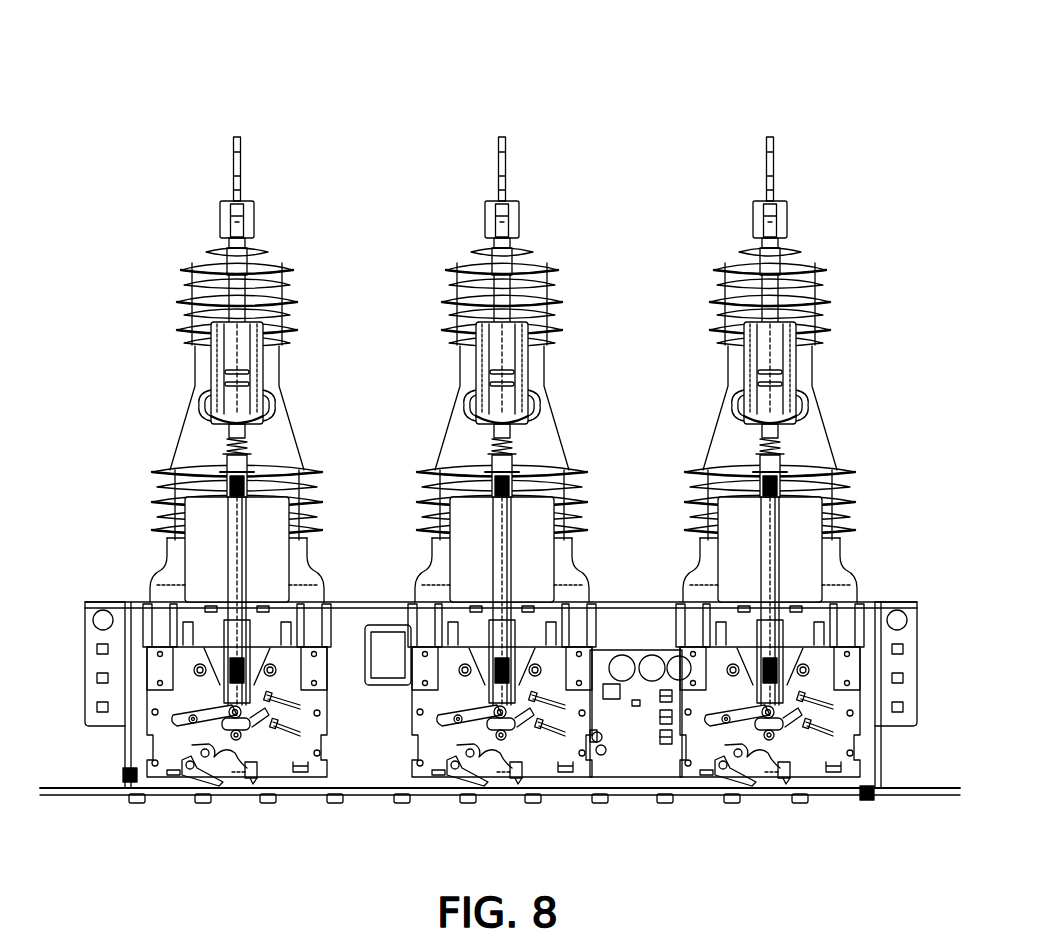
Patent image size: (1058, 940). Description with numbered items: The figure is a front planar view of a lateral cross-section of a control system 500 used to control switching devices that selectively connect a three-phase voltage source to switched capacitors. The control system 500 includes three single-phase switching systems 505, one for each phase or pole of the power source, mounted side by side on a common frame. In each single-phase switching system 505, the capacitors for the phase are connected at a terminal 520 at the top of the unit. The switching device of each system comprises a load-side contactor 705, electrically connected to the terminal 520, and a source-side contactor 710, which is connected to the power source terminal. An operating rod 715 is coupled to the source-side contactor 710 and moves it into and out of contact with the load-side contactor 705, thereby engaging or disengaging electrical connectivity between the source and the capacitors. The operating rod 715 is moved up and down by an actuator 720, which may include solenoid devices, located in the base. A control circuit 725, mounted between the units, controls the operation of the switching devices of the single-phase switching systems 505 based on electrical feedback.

The control system 500 is at (500, 437).
The single-phase switching system 505 is at (814, 498).
The terminal 520 is at (773, 160).
The load-side contactor 705 is at (768, 350).
The source-side contactor 710 is at (768, 405).
The operating rod 715 is at (762, 566).
The actuator 720 is at (805, 745).
The control circuit 725 is at (638, 742).